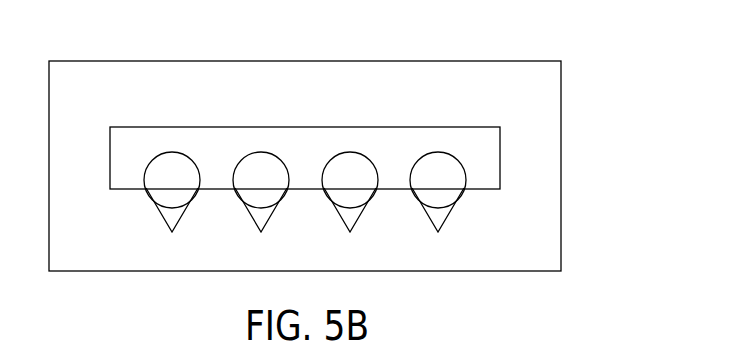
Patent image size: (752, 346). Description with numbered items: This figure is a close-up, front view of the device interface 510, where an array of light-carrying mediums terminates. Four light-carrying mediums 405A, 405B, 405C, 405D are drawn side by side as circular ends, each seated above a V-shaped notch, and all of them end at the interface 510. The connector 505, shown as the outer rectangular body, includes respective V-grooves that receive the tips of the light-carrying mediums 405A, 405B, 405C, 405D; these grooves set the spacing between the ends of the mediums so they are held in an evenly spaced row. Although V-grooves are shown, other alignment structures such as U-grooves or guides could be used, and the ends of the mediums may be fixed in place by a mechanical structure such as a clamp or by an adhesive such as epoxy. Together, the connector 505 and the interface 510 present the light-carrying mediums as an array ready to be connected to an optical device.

The connector 505 is at (515, 61).
The device interface 510 is at (630, 74).
The light-carrying medium 405A is at (173, 152).
The light-carrying medium 405B is at (262, 152).
The light-carrying medium 405C is at (351, 152).
The light-carrying medium 405D is at (439, 152).